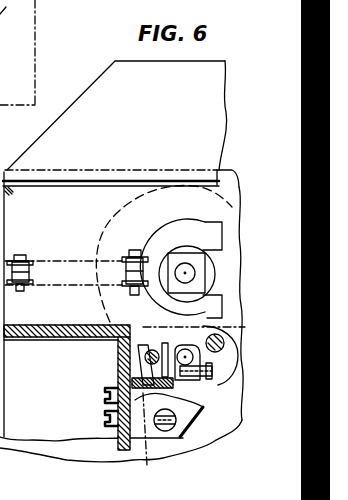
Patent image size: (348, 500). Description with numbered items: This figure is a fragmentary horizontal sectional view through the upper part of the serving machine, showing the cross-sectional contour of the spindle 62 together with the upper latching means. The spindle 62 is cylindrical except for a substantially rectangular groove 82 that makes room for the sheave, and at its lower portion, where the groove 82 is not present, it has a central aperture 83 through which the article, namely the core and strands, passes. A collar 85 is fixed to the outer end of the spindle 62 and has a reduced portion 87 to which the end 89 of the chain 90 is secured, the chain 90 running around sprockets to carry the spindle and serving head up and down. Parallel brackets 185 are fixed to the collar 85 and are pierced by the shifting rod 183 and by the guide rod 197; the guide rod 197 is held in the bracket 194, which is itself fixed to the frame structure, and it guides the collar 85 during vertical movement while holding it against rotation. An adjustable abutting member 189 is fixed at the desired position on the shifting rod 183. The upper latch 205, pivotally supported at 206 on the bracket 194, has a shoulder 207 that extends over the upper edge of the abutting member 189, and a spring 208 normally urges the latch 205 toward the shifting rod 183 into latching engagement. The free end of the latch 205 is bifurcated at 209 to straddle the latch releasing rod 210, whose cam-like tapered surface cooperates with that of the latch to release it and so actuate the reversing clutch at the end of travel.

The parallel brackets 185 is at (17, 52).
The reduced portion 87 is at (135, 252).
The collar 85 is at (178, 226).
The spindle 62 is at (201, 252).
The rectangular groove 82 is at (199, 252).
The central aperture 83 is at (189, 274).
The chain end 89 is at (128, 258).
The chain 90 is at (30, 257).
The shoulder 207 is at (158, 358).
The bifurcated end 209 is at (140, 345).
The latch releasing rod 210 is at (146, 345).
The adjustable abutting member 189 is at (181, 380).
The shifting rod 183 is at (185, 349).
The guide rod 197 is at (230, 362).
The bracket 194 is at (197, 413).
The pivot 206 is at (180, 437).
The upper latch 205 is at (142, 439).
The spring 208 is at (118, 378).